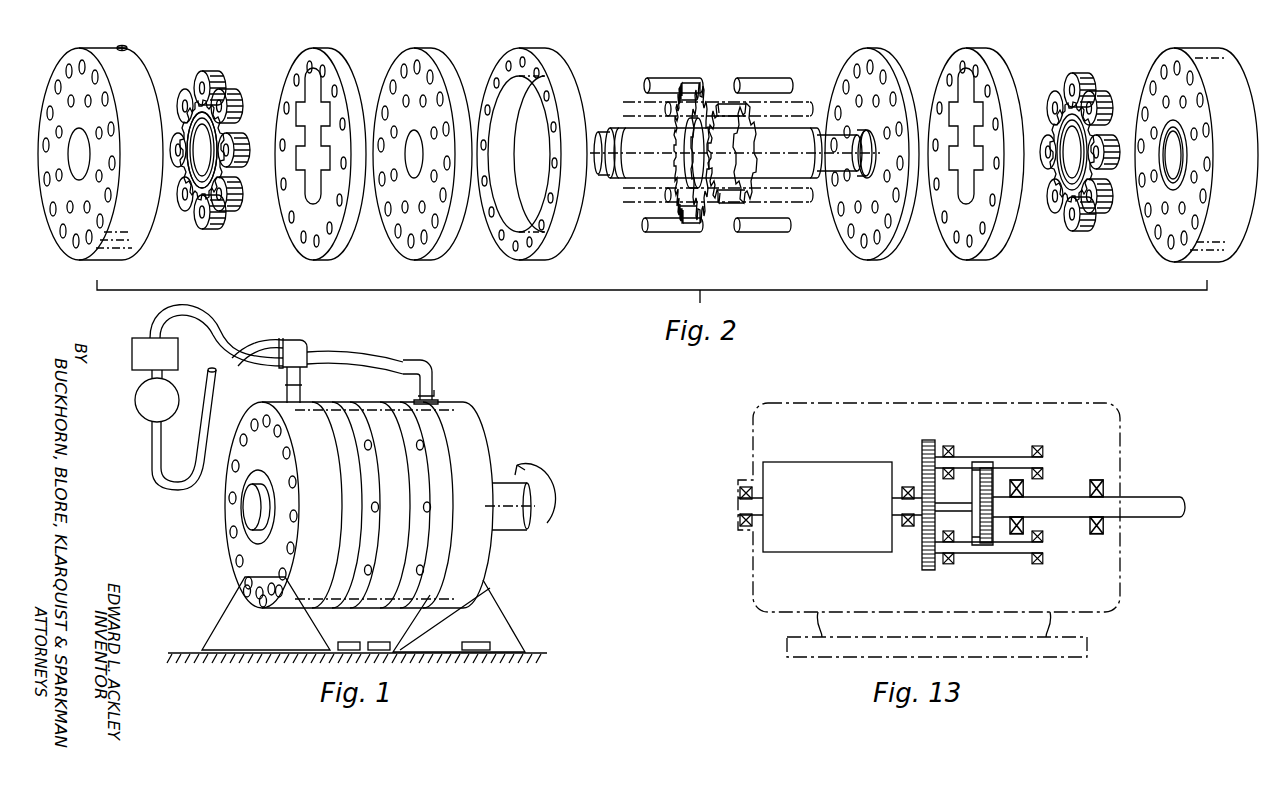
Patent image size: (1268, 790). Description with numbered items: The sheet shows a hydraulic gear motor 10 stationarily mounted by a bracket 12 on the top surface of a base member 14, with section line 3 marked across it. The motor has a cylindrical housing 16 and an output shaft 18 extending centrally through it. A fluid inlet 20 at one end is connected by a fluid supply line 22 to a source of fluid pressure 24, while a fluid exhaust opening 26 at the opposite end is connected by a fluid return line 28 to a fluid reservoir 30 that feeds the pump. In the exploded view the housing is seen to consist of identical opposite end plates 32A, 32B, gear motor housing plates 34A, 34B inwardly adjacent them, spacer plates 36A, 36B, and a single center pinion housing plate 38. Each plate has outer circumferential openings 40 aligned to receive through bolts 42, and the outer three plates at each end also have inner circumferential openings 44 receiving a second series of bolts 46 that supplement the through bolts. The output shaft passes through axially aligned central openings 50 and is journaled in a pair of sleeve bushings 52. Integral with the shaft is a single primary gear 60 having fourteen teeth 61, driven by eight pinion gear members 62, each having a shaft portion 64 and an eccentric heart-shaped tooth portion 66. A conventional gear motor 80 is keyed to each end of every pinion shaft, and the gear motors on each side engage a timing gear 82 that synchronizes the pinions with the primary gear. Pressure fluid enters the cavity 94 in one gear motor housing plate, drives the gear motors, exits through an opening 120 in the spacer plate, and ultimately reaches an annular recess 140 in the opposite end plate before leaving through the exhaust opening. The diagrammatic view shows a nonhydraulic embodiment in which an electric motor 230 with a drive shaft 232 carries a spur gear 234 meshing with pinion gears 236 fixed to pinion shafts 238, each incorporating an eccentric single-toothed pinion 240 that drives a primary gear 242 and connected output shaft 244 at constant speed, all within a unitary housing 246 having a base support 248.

In FIG. 1, the hydraulic gear motor 10 is at (494, 400).
In FIG. 1, the bracket 12 is at (502, 606).
In FIG. 1, the base member 14 is at (538, 652).
In FIG. 1, the cylindrical housing 16 is at (501, 424).
In FIG. 2, the output shaft 18 is at (607, 130).
In FIG. 1, the output shaft 18 is at (512, 530).
In FIG. 2, the fluid inlet 20 is at (126, 47).
In FIG. 1, the fluid inlet 20 is at (301, 392).
In FIG. 1, the fluid supply line 22 is at (176, 482).
In FIG. 1, the source of fluid pressure 24 is at (140, 412).
In FIG. 1, the fluid exhaust opening 26 is at (442, 398).
In FIG. 1, the fluid return line 28 is at (366, 366).
In FIG. 1, the fluid reservoir 30 is at (132, 344).
In FIG. 2, the end plate 32A is at (138, 236).
In FIG. 1, the end plate 32A is at (336, 512).
In FIG. 2, the end plate 32B is at (1214, 254).
In FIG. 1, the end plate 32B is at (482, 515).
In FIG. 2, the gear motor housing plate 34A is at (312, 254).
In FIG. 1, the gear motor housing plate 34A is at (358, 540).
In FIG. 2, the gear motor housing plate 34B is at (994, 258).
In FIG. 1, the gear motor housing plate 34B is at (442, 523).
In FIG. 2, the spacer plate 36A is at (430, 254).
In FIG. 1, the spacer plate 36A is at (376, 484).
In FIG. 2, the spacer plate 36B is at (887, 256).
In FIG. 1, the spacer plate 36B is at (414, 586).
In FIG. 2, the center pinion housing plate 38 is at (516, 262).
In FIG. 1, the center pinion housing plate 38 is at (406, 529).
In FIG. 2, the outer circumferential openings 40 is at (90, 60).
In FIG. 1, the through bolts 42 is at (292, 470).
In FIG. 2, the inner circumferential openings 44 is at (102, 110).
In FIG. 1, the second series of bolts 46 is at (246, 557).
In FIG. 2, the central openings 50 is at (75, 130).
In FIG. 2, the sleeve bushings 52 is at (640, 128).
In FIG. 2, the primary gear 60 is at (757, 116).
In FIG. 2, the teeth 61 is at (722, 214).
In FIG. 2, the pinion gear members 62 is at (763, 77).
In FIG. 2, the shaft portion 64 is at (674, 78).
In FIG. 2, the eccentric tooth portion 66 is at (716, 86).
In FIG. 2, the gear motor 80 is at (213, 58).
In FIG. 2, the timing gears 82 is at (195, 188).
In FIG. 2, the cavity 94 is at (290, 186).
In FIG. 2, the opening 120 is at (440, 200).
In FIG. 2, the annular recess 140 is at (1068, 206).
In FIG. 1, the section line 3 is at (227, 423).
In FIG. 13, the electric motor 230 is at (798, 462).
In FIG. 13, the drive shaft 232 is at (896, 496).
In FIG. 13, the spur gear 234 is at (946, 504).
In FIG. 13, the pinion gears 236 is at (930, 440).
In FIG. 13, the pinion shafts 238 is at (1014, 458).
In FIG. 13, the single-toothed pinion 240 is at (981, 460).
In FIG. 13, the primary gear 242 is at (992, 470).
In FIG. 13, the output shaft 244 is at (1150, 496).
In FIG. 13, the unitary housing 246 is at (748, 592).
In FIG. 13, the base support 248 is at (787, 648).